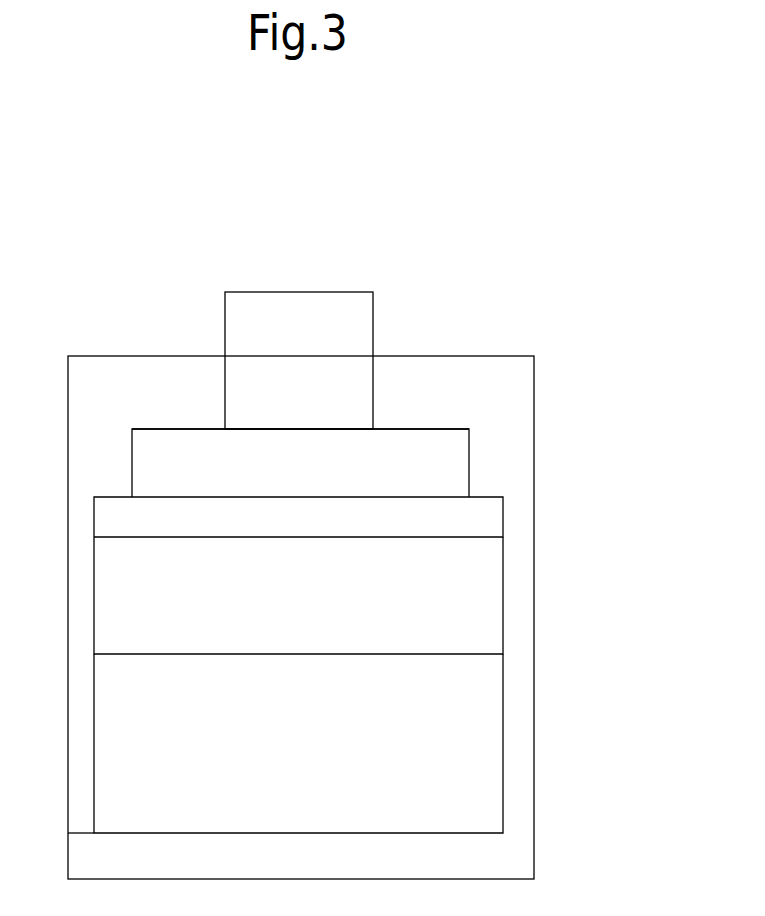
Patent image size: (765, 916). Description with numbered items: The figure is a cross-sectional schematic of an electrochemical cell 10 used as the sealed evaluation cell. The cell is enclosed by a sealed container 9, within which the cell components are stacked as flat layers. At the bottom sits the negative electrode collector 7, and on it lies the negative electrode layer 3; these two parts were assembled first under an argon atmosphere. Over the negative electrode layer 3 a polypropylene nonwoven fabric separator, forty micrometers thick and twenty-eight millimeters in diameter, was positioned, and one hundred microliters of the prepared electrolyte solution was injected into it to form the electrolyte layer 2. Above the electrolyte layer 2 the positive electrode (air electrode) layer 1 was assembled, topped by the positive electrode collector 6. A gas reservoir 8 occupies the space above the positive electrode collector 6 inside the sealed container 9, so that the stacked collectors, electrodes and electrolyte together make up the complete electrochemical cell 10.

The electrochemical cell 10 is at (574, 190).
The sealed container 9 is at (459, 862).
The gas reservoir 8 is at (356, 327).
The positive electrode collector 6 is at (168, 427).
The positive electrode layer 1 is at (437, 463).
The electrolyte layer 2 is at (452, 518).
The negative electrode layer 3 is at (452, 589).
The negative electrode collector 7 is at (459, 745).